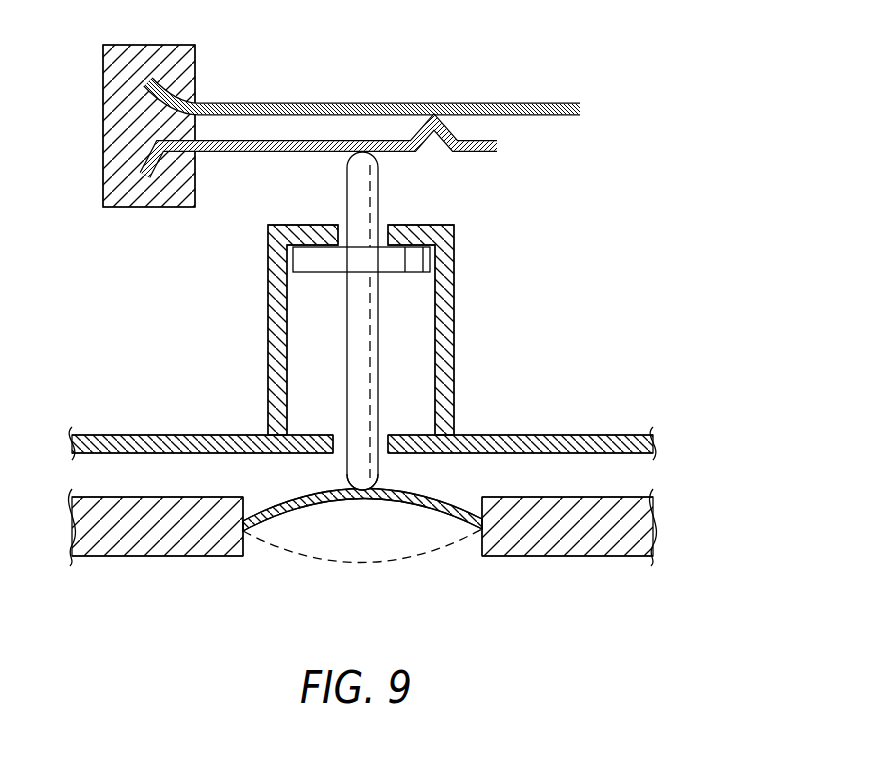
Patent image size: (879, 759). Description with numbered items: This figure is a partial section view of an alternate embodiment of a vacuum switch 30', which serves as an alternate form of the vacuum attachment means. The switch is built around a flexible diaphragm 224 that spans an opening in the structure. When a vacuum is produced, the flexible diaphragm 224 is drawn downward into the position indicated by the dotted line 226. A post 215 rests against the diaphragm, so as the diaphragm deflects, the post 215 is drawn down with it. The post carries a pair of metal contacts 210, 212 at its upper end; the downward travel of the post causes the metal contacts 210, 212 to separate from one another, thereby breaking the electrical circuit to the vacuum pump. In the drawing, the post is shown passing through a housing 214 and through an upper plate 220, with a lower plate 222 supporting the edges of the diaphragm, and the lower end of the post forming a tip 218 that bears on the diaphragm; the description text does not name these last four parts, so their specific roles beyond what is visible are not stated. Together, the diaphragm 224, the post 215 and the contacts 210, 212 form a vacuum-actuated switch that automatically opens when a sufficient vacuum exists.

The vacuum switch 30' is at (418, 314).
The metal contact 210 is at (490, 103).
The metal contact 212 is at (498, 146).
The housing 214 is at (457, 367).
The post 215 is at (370, 335).
The plunger tip 218 is at (373, 474).
The upper plate 220 is at (142, 445).
The lower plate 222 is at (173, 538).
The flexible diaphragm 224 is at (290, 512).
The dotted line 226 is at (383, 561).